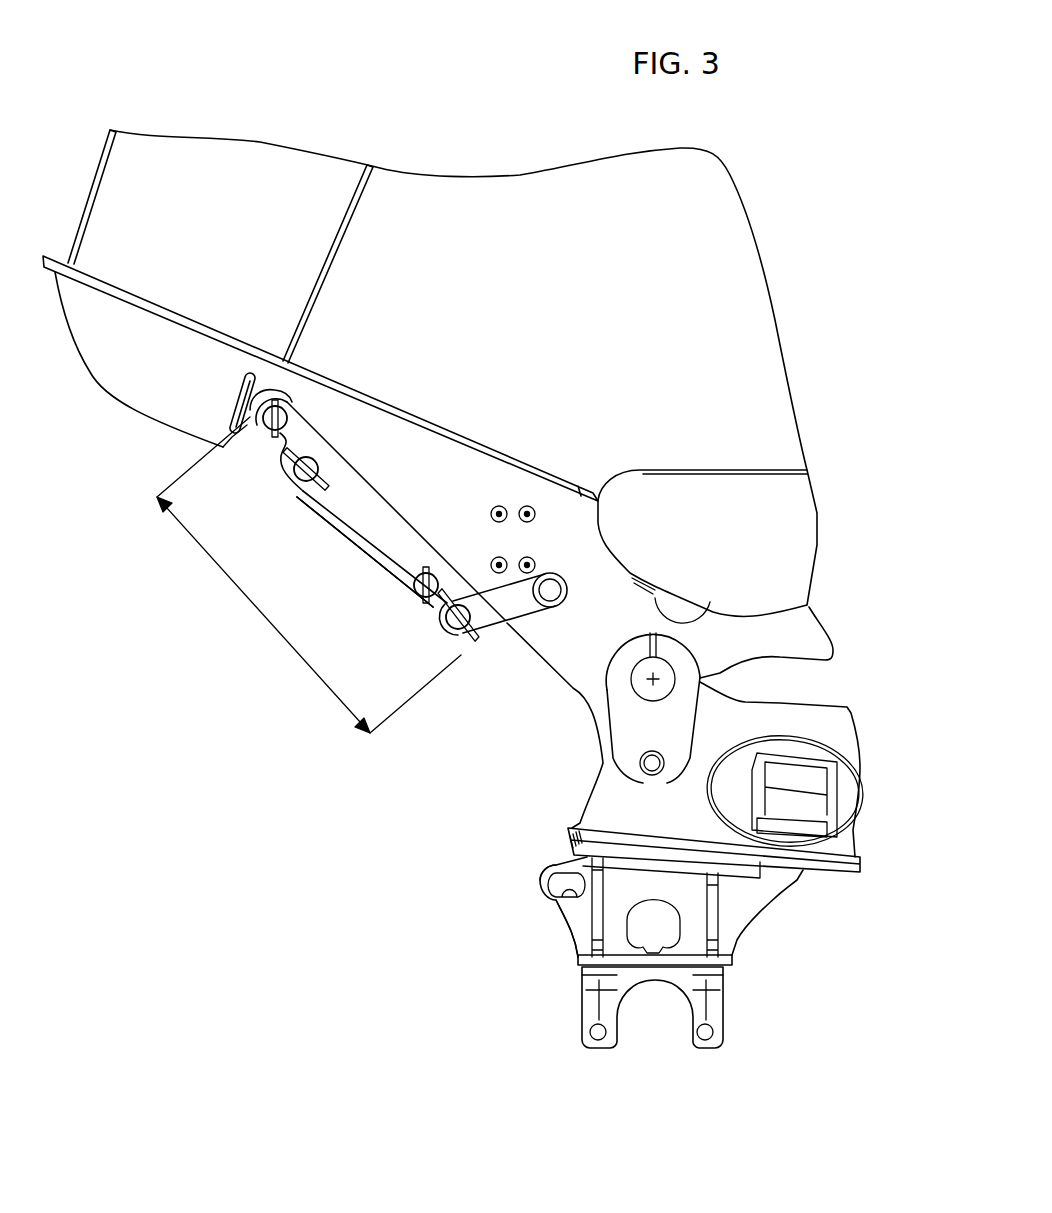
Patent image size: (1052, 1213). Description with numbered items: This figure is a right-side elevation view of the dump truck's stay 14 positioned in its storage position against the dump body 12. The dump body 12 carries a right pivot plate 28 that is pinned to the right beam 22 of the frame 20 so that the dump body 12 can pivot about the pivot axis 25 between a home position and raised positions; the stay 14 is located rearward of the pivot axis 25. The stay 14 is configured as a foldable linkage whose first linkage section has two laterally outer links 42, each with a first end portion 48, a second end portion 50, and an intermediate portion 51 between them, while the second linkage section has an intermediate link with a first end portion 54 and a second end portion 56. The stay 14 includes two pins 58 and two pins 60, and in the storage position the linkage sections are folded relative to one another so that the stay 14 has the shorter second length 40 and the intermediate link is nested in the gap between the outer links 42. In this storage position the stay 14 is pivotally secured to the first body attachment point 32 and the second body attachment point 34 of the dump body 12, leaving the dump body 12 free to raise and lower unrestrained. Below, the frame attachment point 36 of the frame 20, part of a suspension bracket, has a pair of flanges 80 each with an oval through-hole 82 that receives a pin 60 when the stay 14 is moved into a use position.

The dump body 12 is at (472, 198).
The stay 14 is at (360, 565).
The frame 20 is at (793, 897).
The beam 22 is at (843, 853).
The pivot axis 25 is at (650, 677).
The pivot plate 28 is at (505, 480).
The first body attachment point 32 is at (250, 433).
The second body attachment point 34 is at (458, 643).
The frame attachment point 36 is at (537, 880).
The second length 40 is at (256, 609).
The outer link 42 is at (368, 512).
The first end portion 48 is at (285, 398).
The second end portion 50 is at (417, 563).
The intermediate portion 51 is at (360, 525).
The first end portion 54 is at (445, 622).
The second end portion 56 is at (303, 495).
The pin 58 is at (262, 430).
The pin 60 is at (288, 483).
The flange 80 is at (573, 933).
The through-hole 82 is at (565, 892).